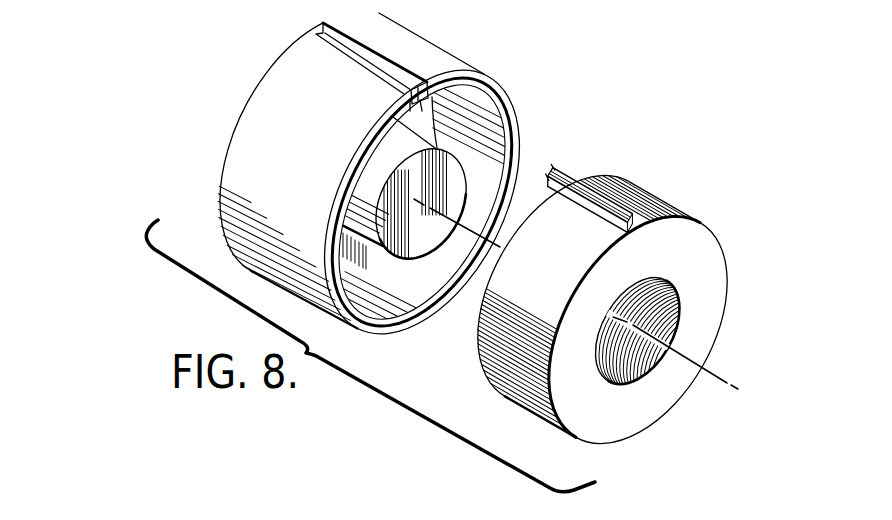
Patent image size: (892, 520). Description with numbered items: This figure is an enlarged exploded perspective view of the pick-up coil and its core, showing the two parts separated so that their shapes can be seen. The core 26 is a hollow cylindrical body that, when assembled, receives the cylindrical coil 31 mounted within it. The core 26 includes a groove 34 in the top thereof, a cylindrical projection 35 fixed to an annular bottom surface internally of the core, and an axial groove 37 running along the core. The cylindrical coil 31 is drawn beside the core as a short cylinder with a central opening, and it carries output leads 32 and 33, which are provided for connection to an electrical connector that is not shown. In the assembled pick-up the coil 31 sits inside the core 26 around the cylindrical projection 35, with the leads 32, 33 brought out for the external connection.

The core 26 is at (524, 106).
The cylindrical coil 31 is at (615, 430).
The output lead 32 is at (592, 205).
The output lead 33 is at (552, 176).
The groove 34 is at (418, 106).
The cylindrical projection 35 is at (418, 228).
The axial groove 37 is at (312, 33).